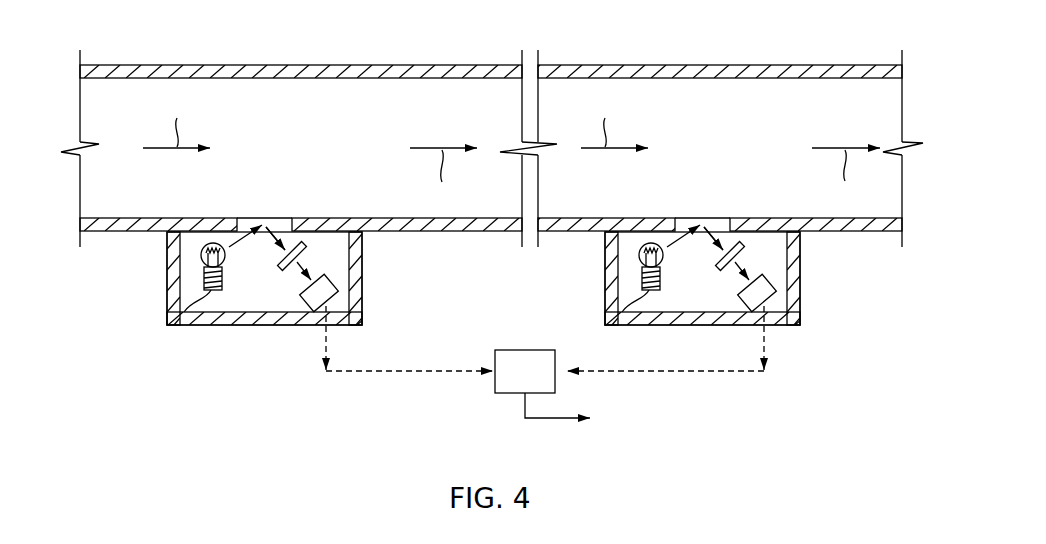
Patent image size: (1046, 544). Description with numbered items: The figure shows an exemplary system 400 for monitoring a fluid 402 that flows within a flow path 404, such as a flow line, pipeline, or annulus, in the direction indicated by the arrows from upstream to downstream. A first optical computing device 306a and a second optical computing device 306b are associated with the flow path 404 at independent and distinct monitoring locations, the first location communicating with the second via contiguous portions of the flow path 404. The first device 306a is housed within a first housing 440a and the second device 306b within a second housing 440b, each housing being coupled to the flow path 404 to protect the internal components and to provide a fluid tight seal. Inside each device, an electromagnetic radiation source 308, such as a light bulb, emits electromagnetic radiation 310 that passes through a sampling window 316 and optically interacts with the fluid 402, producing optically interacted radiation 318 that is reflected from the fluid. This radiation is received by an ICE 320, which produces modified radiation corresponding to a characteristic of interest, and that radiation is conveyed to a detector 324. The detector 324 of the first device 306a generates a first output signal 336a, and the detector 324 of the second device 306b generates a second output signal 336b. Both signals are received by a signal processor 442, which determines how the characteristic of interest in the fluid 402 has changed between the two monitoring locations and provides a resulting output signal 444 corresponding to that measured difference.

The system 400 is at (211, 360).
The fluid 402 is at (371, 110).
The flow path 404 is at (702, 72).
The first optical computing device 306a is at (144, 265).
The second optical computing device 306b is at (818, 277).
The electromagnetic radiation source 308 is at (181, 325).
The electromagnetic radiation 310 is at (262, 221).
The sampling window 316 is at (291, 218).
The optically interacted radiation 318 is at (266, 235).
The ICE 320 is at (303, 248).
The detector 324 is at (306, 303).
The first output signal 336a is at (372, 371).
The second output signal 336b is at (712, 371).
The first housing 440a is at (361, 272).
The second housing 440b is at (606, 273).
The signal processor 442 is at (511, 382).
The resulting output signal 444 is at (549, 419).